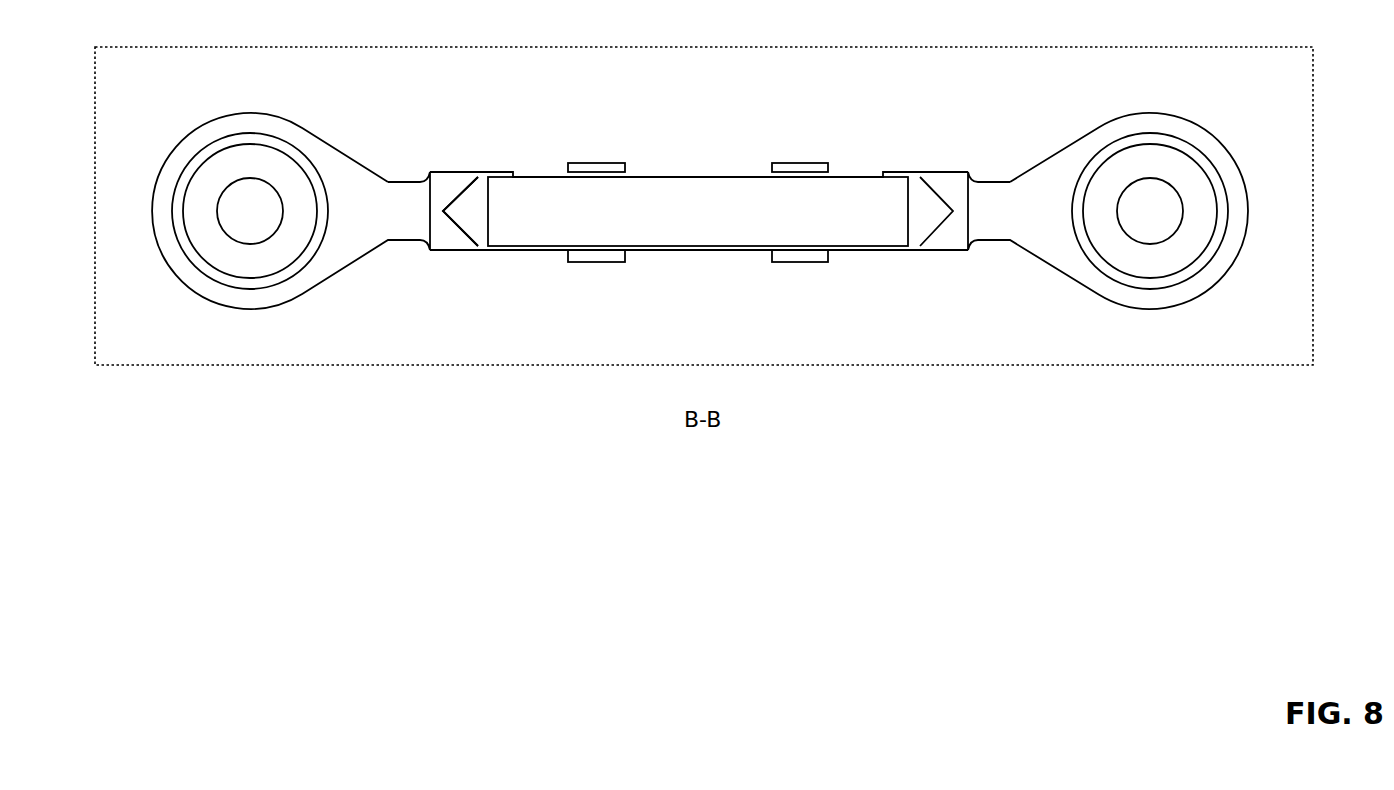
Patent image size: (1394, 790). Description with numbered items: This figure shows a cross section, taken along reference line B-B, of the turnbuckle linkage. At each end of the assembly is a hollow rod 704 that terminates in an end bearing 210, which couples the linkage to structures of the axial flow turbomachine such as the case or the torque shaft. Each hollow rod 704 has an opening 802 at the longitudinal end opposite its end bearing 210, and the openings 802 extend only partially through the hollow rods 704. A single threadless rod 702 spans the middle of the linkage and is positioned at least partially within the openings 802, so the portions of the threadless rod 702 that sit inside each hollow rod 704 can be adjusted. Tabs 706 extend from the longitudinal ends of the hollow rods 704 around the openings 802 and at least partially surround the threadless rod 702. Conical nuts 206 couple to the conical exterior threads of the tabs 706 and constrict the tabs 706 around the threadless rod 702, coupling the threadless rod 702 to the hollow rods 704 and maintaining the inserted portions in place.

The end bearing 210 is at (1185, 120).
The hollow rods 704 is at (442, 172).
The threadless rod 702 is at (640, 172).
The conical nuts 206 is at (795, 163).
The tabs 706 is at (788, 252).
The openings 802 is at (476, 232).